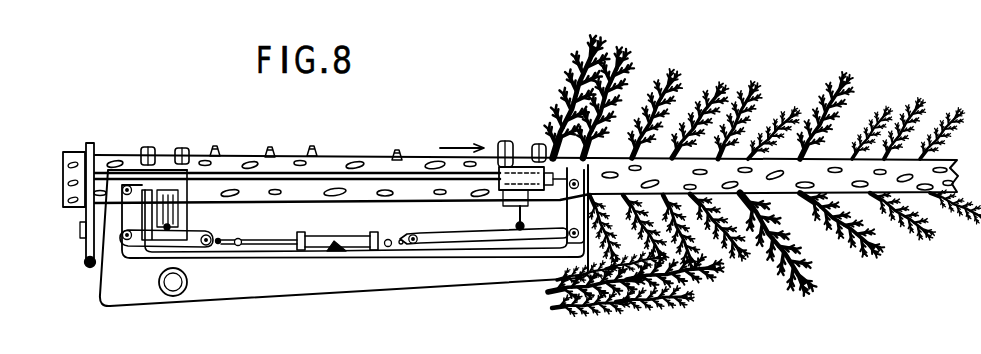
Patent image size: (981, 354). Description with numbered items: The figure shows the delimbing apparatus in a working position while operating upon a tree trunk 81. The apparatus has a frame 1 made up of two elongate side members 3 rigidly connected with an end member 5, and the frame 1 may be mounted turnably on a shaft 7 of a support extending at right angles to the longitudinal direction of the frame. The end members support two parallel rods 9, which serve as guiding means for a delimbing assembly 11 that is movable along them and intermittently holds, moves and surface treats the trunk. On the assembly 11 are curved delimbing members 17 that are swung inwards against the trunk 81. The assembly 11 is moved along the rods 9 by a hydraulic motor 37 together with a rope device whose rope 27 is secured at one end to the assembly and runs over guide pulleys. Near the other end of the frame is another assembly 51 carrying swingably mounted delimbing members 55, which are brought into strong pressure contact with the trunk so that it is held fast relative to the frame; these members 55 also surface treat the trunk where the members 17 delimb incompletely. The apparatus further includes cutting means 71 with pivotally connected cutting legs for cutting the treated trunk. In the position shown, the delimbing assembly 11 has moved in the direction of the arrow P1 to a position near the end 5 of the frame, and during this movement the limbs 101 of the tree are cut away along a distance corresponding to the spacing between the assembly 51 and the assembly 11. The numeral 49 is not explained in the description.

The frame 1 is at (112, 308).
The side member 3 is at (290, 276).
The end member 5 is at (566, 233).
The shaft 7 is at (181, 290).
The rods 9 is at (338, 172).
The delimbing assembly 11 is at (497, 205).
The delimbing members 17 is at (540, 146).
The rope 27 is at (460, 244).
The hydraulic motor 37 is at (360, 242).
The branch stock 49 is at (248, 181).
The assembly 51 is at (190, 207).
The delimbing members 55 is at (183, 147).
The cutting means 71 is at (85, 254).
The tree trunk 81 is at (389, 152).
The limbs 101 is at (555, 313).
The arrow P1 is at (462, 135).